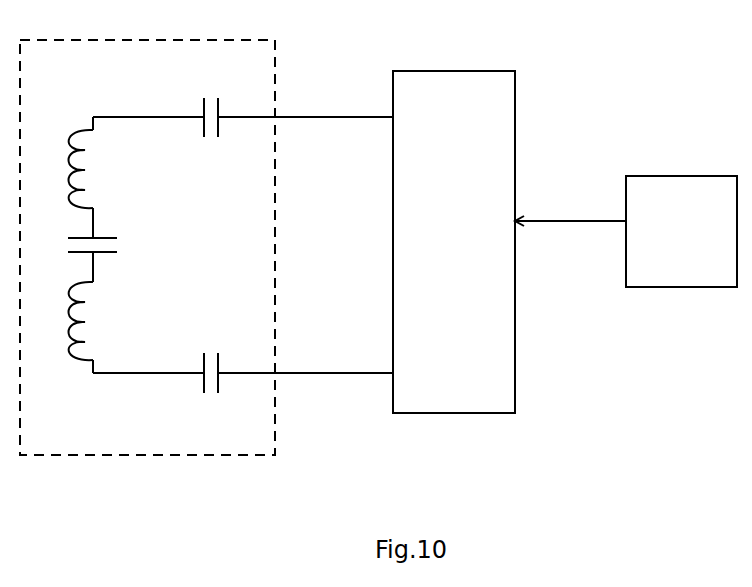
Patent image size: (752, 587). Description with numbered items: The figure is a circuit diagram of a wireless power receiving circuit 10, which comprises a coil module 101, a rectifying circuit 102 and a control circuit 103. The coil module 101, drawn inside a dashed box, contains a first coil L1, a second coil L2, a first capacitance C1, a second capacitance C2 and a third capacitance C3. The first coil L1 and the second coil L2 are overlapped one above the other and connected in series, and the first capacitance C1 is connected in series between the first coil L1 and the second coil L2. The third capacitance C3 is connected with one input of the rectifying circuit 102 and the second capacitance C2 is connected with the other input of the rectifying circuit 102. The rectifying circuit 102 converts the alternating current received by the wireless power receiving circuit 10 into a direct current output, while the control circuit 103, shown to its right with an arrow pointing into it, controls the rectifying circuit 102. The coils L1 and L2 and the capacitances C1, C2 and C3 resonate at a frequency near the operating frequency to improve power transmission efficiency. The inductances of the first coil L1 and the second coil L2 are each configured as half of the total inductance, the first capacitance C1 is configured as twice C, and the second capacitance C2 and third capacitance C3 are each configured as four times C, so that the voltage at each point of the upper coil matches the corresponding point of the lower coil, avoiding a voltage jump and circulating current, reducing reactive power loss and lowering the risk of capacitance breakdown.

The wireless power receiving circuit 10 is at (558, 345).
The coil module 101 is at (206, 232).
The rectifying circuit 102 is at (515, 125).
The control circuit 103 is at (626, 176).
The first coil L1 is at (67, 169).
The second coil L2 is at (67, 321).
The first capacitance C1 is at (79, 242).
The second capacitance C2 is at (208, 387).
The third capacitance C3 is at (211, 107).